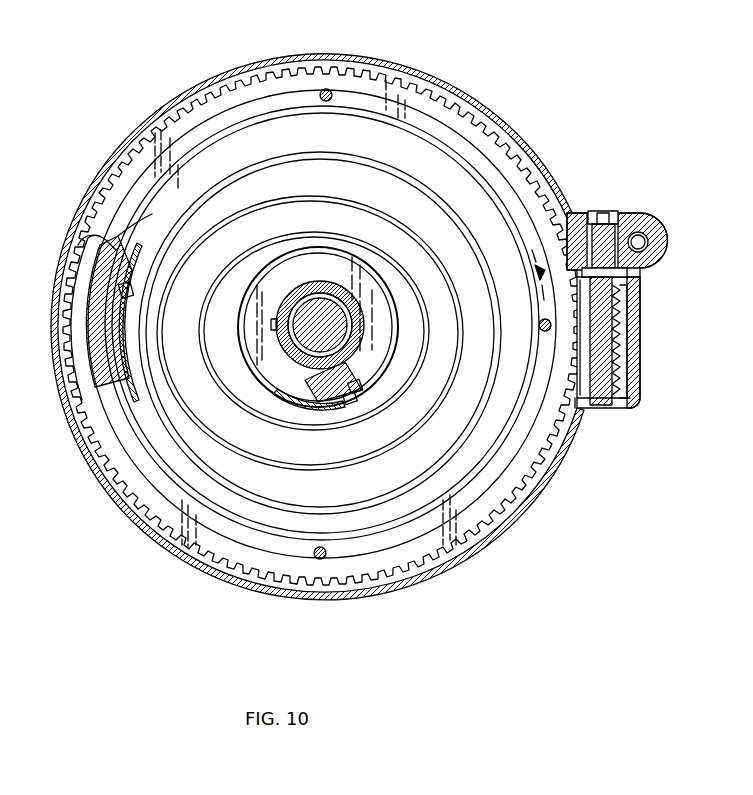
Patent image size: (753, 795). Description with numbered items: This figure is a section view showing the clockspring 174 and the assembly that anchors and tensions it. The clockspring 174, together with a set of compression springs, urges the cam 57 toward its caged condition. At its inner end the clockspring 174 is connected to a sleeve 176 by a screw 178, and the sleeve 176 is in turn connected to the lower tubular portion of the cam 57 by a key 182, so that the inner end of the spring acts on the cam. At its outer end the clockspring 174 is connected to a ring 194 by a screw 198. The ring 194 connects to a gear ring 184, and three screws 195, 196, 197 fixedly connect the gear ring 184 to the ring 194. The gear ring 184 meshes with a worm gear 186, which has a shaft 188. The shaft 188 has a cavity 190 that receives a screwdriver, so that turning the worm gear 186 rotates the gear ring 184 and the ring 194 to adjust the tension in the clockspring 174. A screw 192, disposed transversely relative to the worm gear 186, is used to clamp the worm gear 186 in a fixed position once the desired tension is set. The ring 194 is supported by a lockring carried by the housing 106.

The cam 57 is at (333, 282).
The housing 106 is at (487, 108).
The clockspring 174 is at (368, 162).
The sleeve 176 is at (285, 275).
The screw 178 is at (352, 410).
The key 182 is at (271, 326).
The gear ring 184 is at (545, 445).
The worm gear 186 is at (640, 305).
The shaft 188 is at (600, 408).
The cavity 190 is at (604, 211).
The screw 192 is at (644, 238).
The ring 194 is at (95, 362).
The screw 195 is at (539, 325).
The screw 196 is at (321, 560).
The screw 197 is at (330, 90).
The screw 198 is at (130, 292).